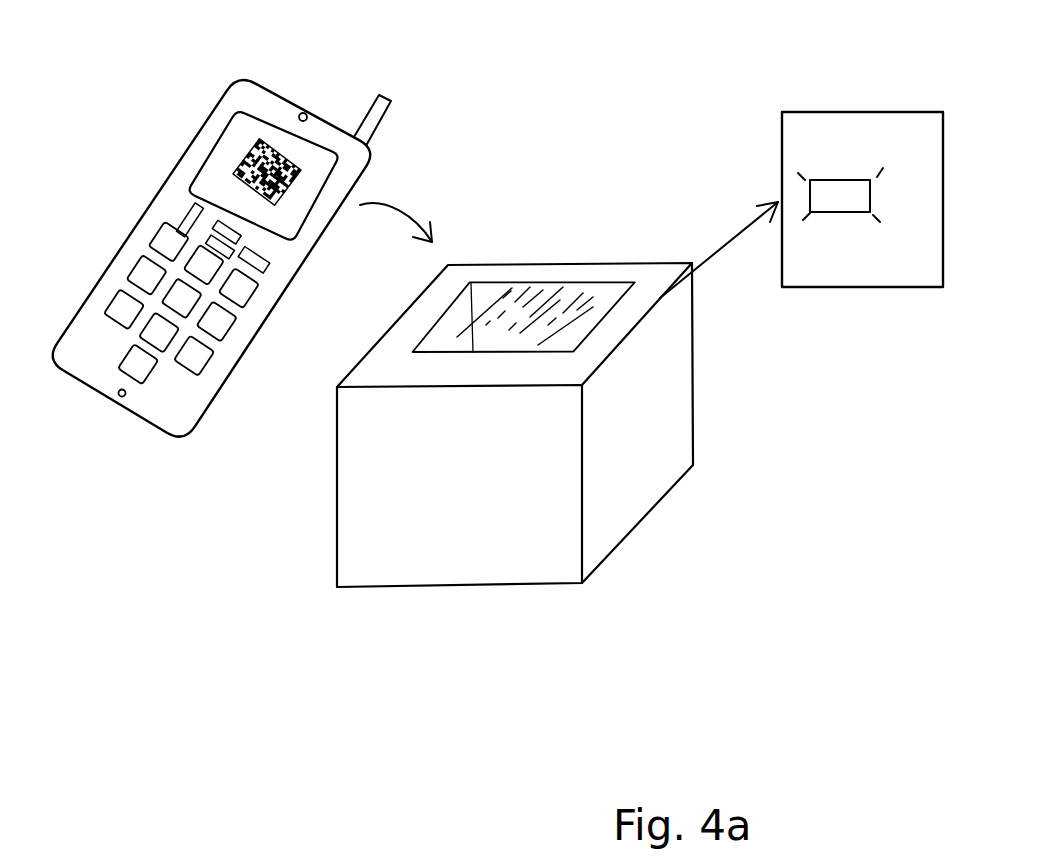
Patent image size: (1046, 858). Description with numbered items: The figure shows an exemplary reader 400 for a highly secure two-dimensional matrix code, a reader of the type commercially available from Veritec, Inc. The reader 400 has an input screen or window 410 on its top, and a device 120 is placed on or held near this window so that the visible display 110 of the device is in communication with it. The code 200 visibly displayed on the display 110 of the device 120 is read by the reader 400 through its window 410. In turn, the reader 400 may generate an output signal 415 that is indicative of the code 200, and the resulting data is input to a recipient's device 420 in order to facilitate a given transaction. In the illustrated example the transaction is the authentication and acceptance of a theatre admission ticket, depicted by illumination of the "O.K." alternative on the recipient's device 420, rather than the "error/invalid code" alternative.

The visible display 110 is at (227, 124).
The device 120 is at (217, 239).
The code 200 is at (243, 155).
The reader 400 is at (640, 353).
The input screen or window 410 is at (522, 298).
The output signal 415 is at (732, 243).
The recipient's device 420 is at (828, 110).